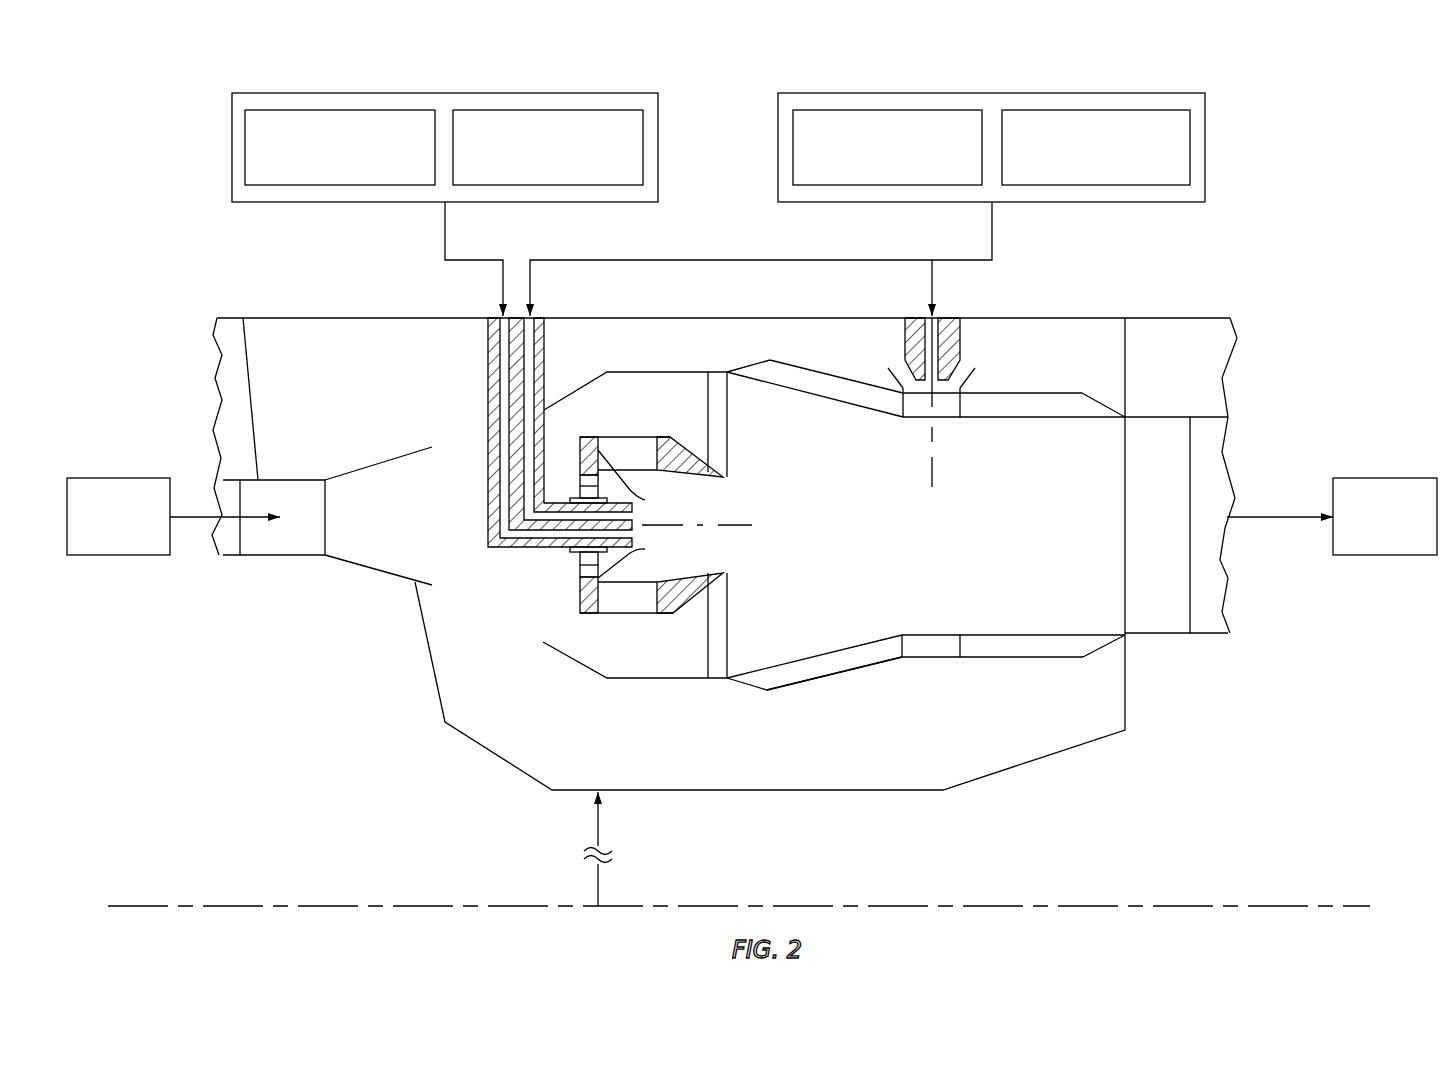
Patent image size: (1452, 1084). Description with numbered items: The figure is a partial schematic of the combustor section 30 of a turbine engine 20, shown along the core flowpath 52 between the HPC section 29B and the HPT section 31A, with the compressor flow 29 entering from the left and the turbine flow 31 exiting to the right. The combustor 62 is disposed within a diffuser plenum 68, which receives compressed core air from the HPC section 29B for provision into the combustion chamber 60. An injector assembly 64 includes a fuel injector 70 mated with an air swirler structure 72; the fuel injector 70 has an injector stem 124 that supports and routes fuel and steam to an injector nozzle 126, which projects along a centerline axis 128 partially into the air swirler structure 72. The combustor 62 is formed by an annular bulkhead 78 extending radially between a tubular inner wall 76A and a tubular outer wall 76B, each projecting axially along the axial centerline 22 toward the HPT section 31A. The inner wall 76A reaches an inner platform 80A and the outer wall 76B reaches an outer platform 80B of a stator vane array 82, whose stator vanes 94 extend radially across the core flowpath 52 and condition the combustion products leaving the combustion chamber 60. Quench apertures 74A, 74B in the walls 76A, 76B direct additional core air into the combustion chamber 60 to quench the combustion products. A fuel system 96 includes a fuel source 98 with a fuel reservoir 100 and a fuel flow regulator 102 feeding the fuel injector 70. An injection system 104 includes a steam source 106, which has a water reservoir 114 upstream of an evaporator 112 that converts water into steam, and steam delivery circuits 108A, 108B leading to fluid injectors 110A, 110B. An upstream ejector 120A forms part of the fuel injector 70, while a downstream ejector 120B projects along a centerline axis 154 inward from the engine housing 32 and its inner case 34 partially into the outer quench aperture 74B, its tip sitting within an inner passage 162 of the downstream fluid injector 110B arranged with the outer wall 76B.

The turbine engine 20 is at (138, 120).
The axial centerline 22 is at (116, 906).
The inlet air flow 29 is at (120, 447).
The HPC section 29B is at (96, 531).
The combustor section 30 is at (727, 506).
The exhaust flow 31 is at (1328, 423).
The HPT section 31A is at (1363, 531).
The engine housing 32 is at (723, 270).
The inner case 34 is at (340, 305).
The core flowpath 52 is at (232, 538).
The combustion chamber 60 is at (957, 543).
The combustor 62 is at (832, 683).
The injector assembly 64 is at (502, 560).
The diffuser plenum 68 is at (310, 401).
The fuel injector 70 is at (502, 498).
The air swirler structure 72 is at (700, 443).
The inner quench aperture 74A is at (930, 623).
The outer quench aperture 74B is at (904, 432).
The inner combustor wall 76A is at (1033, 622).
The outer combustor wall 76B is at (1053, 425).
The combustor bulkhead 78 is at (740, 622).
The inner platform 80A is at (1163, 633).
The outer platform 80B is at (1163, 417).
The stator vane array 82 is at (1200, 438).
The stator vane 94 is at (1190, 588).
The fuel system 96 is at (454, 122).
The fuel source 98 is at (232, 150).
The fuel reservoir 100 is at (321, 173).
The fuel flow regulator 102 is at (529, 173).
The injection system 104 is at (1054, 126).
The steam source 106 is at (1205, 150).
The steam delivery circuit 108A is at (548, 280).
The steam delivery circuit 108B is at (918, 280).
The fluid injector 110A is at (630, 572).
The downstream fluid injector 110B is at (977, 385).
The evaporator 112 is at (868, 173).
The water reservoir 114 is at (1077, 173).
The upstream ejector 120A is at (538, 498).
The downstream ejector 120B is at (970, 333).
The injector stem 124 is at (477, 387).
The injector nozzle 126 is at (558, 557).
The centerline axis 128 is at (752, 527).
The centerline axis 154 is at (932, 465).
The inner passage 162 is at (947, 425).